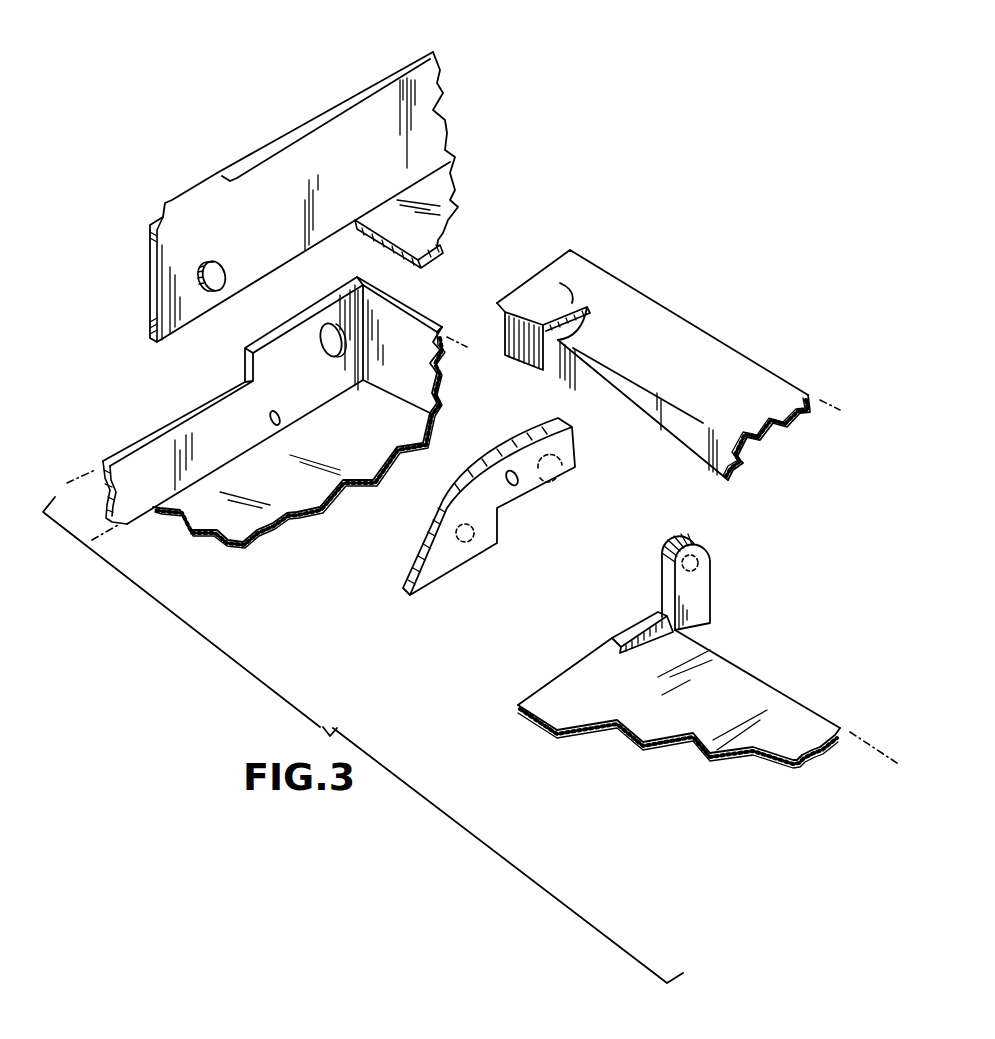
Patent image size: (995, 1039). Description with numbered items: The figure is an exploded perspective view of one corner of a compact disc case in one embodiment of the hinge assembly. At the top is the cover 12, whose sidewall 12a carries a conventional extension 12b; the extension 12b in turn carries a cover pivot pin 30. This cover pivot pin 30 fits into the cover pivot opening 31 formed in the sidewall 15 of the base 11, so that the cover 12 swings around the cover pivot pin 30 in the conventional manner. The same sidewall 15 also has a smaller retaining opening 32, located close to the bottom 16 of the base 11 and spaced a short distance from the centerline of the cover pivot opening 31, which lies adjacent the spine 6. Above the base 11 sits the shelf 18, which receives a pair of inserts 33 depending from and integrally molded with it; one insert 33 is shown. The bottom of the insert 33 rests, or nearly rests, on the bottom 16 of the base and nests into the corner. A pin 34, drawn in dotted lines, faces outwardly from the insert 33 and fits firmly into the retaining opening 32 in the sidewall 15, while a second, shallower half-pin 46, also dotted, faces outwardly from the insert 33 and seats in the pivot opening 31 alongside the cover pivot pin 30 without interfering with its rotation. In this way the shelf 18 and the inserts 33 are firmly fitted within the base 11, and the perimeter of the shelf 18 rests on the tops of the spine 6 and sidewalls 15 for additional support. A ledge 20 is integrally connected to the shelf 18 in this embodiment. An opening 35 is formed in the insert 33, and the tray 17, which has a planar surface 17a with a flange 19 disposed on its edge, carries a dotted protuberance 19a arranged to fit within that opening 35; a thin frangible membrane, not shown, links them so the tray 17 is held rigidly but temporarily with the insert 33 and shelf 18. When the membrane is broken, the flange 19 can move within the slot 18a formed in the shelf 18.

The spine 6 is at (276, 426).
The base 11 is at (140, 427).
The cover 12 is at (332, 178).
The sidewall 12a is at (412, 60).
The extension 12b is at (295, 130).
The sidewall 15 is at (210, 398).
The bottom 16 is at (258, 517).
The tray 17 is at (680, 656).
The planar surface 17a is at (612, 713).
The shelf 18 is at (653, 371).
The slot 18a is at (548, 272).
The flange 19 is at (691, 582).
The protuberance 19a is at (702, 563).
The ledge 20 is at (750, 480).
The cover pivot pin 30 is at (215, 263).
The cover pivot opening 31 is at (328, 323).
The retaining opening 32 is at (283, 418).
The insert 33 is at (510, 506).
The pin 34 is at (468, 548).
The opening 35 is at (518, 484).
The second pin 46 is at (567, 470).